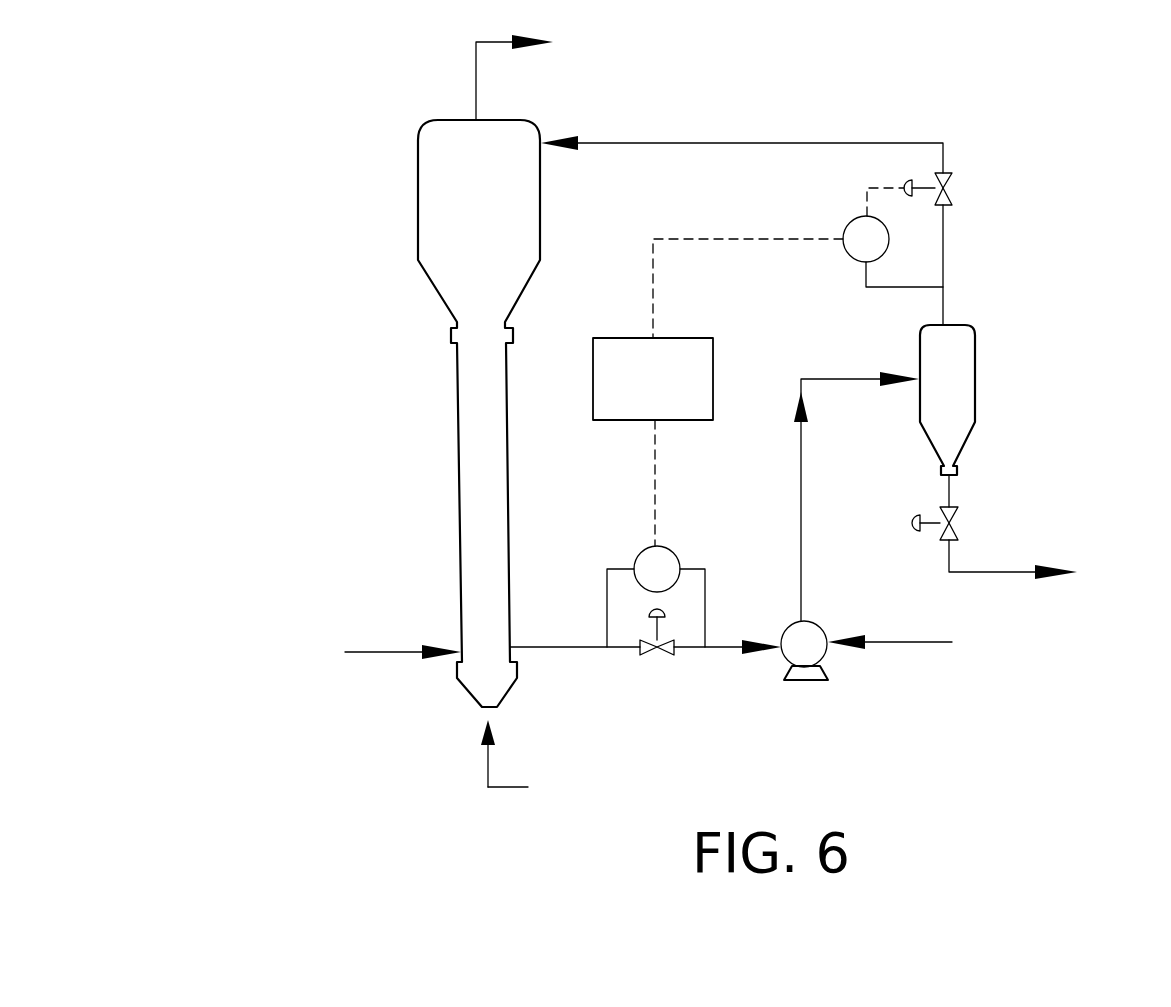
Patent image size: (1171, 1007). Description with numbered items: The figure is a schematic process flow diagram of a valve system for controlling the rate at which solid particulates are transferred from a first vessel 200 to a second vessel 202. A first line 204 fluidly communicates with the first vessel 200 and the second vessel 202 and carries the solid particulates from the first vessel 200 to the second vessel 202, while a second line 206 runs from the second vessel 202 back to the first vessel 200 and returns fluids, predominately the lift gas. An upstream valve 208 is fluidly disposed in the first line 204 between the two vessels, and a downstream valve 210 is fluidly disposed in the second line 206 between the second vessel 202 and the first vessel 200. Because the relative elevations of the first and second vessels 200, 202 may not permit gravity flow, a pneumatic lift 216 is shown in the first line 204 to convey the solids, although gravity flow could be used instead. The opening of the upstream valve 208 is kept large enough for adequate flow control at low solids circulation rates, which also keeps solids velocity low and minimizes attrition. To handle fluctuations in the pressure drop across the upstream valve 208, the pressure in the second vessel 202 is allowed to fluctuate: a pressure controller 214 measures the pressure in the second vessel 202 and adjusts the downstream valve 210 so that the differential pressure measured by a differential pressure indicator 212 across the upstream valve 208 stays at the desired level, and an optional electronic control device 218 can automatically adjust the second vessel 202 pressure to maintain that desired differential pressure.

The first vessel 200 is at (418, 198).
The second vessel 202 is at (976, 380).
The first line 204 is at (727, 648).
The second line 206 is at (821, 143).
The upstream valve 208 is at (656, 656).
The downstream valve 210 is at (952, 189).
The differential pressure indicator 212 is at (674, 549).
The pressure controller 214 is at (852, 257).
The pneumatic lift 216 is at (822, 662).
The electronic control device 218 is at (630, 398).